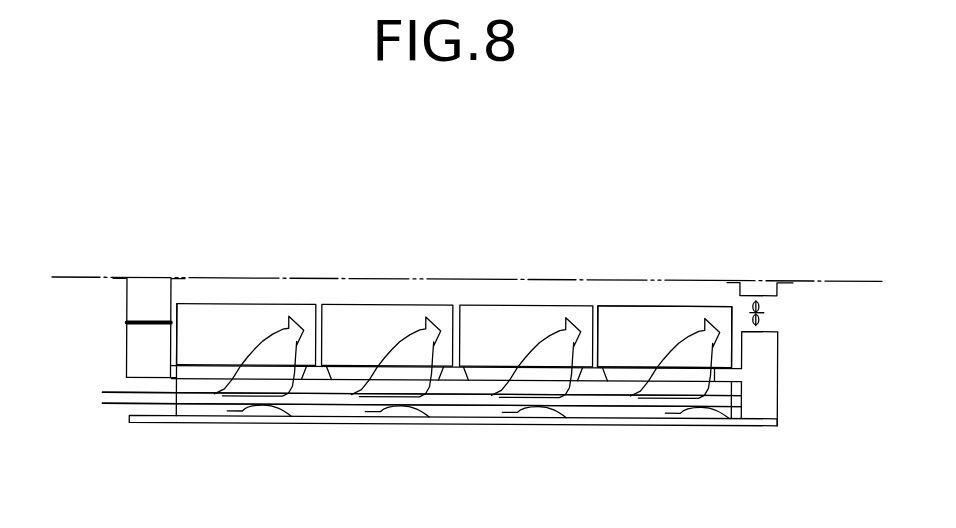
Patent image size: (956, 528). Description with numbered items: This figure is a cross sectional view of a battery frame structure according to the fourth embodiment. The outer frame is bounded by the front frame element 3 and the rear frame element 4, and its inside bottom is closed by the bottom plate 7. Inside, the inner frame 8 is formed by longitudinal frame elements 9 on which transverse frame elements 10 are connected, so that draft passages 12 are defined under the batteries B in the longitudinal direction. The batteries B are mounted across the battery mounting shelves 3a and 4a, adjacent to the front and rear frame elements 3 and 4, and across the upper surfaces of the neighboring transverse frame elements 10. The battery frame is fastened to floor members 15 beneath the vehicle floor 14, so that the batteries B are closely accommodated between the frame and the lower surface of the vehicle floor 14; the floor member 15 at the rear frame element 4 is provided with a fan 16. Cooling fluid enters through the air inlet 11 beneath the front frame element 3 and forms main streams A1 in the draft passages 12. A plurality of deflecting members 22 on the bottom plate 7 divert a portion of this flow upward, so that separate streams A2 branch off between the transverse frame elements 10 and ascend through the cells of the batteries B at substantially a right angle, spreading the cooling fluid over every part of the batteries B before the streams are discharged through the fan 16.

The front frame element 3 is at (125, 343).
The battery mounting shelf 3a is at (185, 364).
The rear frame element 4 is at (779, 356).
The battery mounting shelf 4a is at (728, 392).
The bottom plate 7 is at (447, 425).
The inner frame 8 is at (488, 364).
The longitudinal frame element 9 is at (652, 340).
The transverse frame element 10 is at (325, 370).
The air inlet 11 is at (131, 407).
The draft passage 12 is at (651, 410).
The vehicle floor 14 is at (838, 278).
The floor member 15 is at (124, 288).
The fan 16 is at (764, 309).
The deflecting member 22 is at (237, 410).
The main stream A1 is at (307, 400).
The separate stream A2 is at (252, 350).
The battery B is at (192, 302).